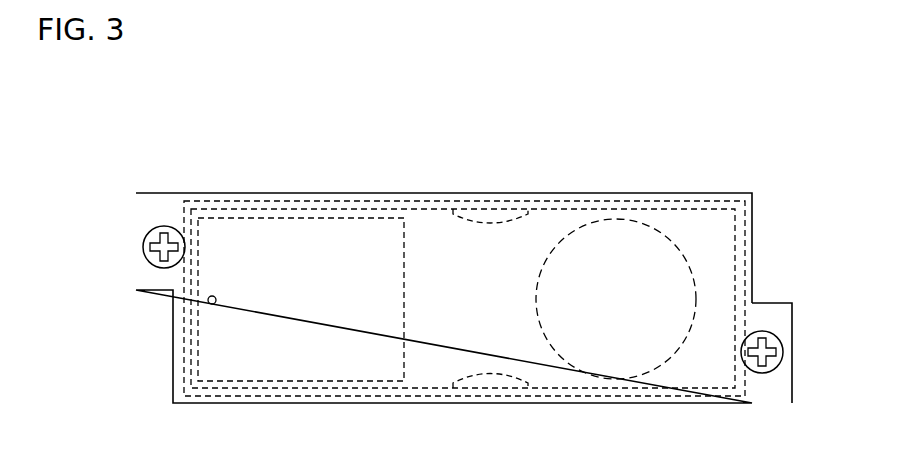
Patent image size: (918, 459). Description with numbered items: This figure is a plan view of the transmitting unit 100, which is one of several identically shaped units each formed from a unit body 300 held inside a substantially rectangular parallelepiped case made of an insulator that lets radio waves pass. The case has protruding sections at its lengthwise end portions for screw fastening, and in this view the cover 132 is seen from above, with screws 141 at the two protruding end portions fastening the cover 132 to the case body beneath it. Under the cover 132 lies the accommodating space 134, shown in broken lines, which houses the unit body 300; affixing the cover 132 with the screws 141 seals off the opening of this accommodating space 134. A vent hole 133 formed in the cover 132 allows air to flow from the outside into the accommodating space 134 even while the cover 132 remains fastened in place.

The transmitting unit 100 is at (292, 166).
The cover 132 is at (763, 316).
The vent hole 133 is at (207, 302).
The accommodating space 134 is at (217, 193).
The screws 141 is at (150, 245).
The unit body 300 is at (553, 215).